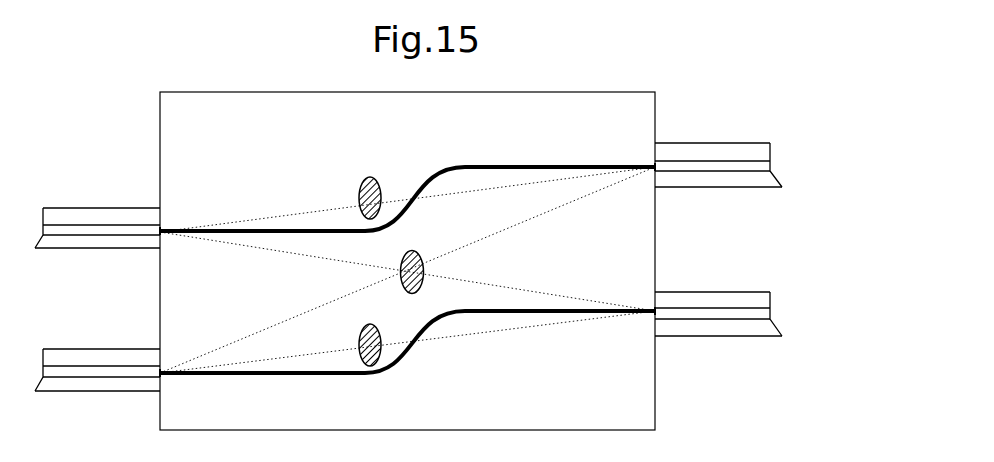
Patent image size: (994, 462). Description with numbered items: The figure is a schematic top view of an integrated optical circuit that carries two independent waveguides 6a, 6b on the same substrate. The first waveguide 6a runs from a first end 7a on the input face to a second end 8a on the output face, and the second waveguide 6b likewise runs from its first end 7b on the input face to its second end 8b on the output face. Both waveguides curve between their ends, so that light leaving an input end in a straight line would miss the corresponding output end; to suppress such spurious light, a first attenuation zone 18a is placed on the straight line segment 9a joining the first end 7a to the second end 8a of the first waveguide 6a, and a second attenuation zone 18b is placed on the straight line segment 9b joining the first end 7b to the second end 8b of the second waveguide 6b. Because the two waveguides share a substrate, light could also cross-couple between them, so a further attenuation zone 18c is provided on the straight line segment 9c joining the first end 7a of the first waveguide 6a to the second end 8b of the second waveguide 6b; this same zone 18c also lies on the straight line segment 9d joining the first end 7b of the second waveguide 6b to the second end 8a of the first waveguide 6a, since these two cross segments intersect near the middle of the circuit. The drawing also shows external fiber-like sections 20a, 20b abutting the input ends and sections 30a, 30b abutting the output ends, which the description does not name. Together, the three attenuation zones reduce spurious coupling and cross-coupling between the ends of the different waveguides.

The first waveguide 6a is at (507, 165).
The second waveguide 6b is at (345, 375).
The first end of the first waveguide 7a is at (163, 230).
The first end of the second waveguide 7b is at (163, 373).
The second end of the first waveguide 8a is at (653, 167).
The second end of the second waveguide 8b is at (655, 315).
The straight line segment 9a is at (300, 210).
The straight line segment 9b is at (488, 335).
The straight line segment 9c is at (535, 293).
The straight line segment 9d is at (593, 192).
The first attenuation zone 18a is at (358, 195).
The second attenuation zone 18b is at (358, 326).
The attenuation zone 18c is at (400, 273).
The input optical fiber 20a is at (113, 208).
The input optical fiber 20b is at (113, 349).
The output optical fiber 30a is at (732, 143).
The output optical fiber 30b is at (732, 292).